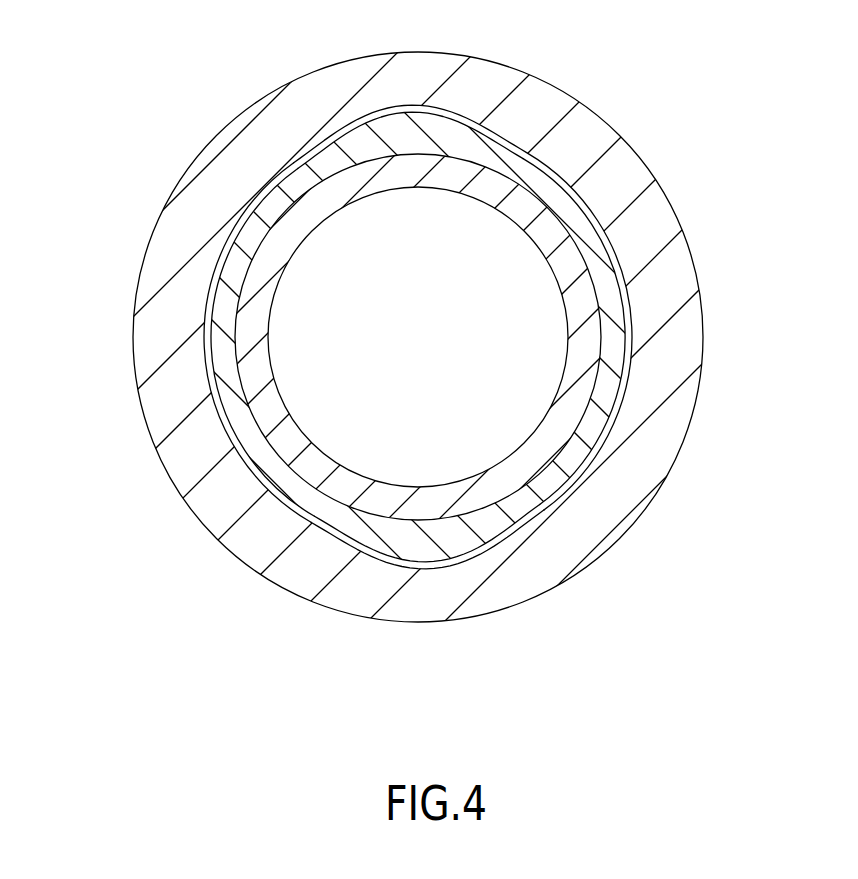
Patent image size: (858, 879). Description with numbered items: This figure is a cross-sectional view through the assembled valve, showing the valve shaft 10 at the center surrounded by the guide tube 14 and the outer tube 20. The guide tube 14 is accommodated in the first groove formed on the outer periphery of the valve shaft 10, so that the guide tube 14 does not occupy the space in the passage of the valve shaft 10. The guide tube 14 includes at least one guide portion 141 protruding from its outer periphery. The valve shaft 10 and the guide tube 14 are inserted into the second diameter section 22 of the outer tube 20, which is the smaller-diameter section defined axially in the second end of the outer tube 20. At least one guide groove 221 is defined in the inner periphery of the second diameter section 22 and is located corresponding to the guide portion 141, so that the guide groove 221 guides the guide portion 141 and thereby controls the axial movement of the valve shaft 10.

The valve shaft 10 is at (582, 300).
The guide tube 14 is at (243, 424).
The guide portion 141 is at (440, 127).
The outer tube 20 is at (209, 138).
The second diameter section 22 is at (590, 208).
The guide groove 221 is at (468, 560).